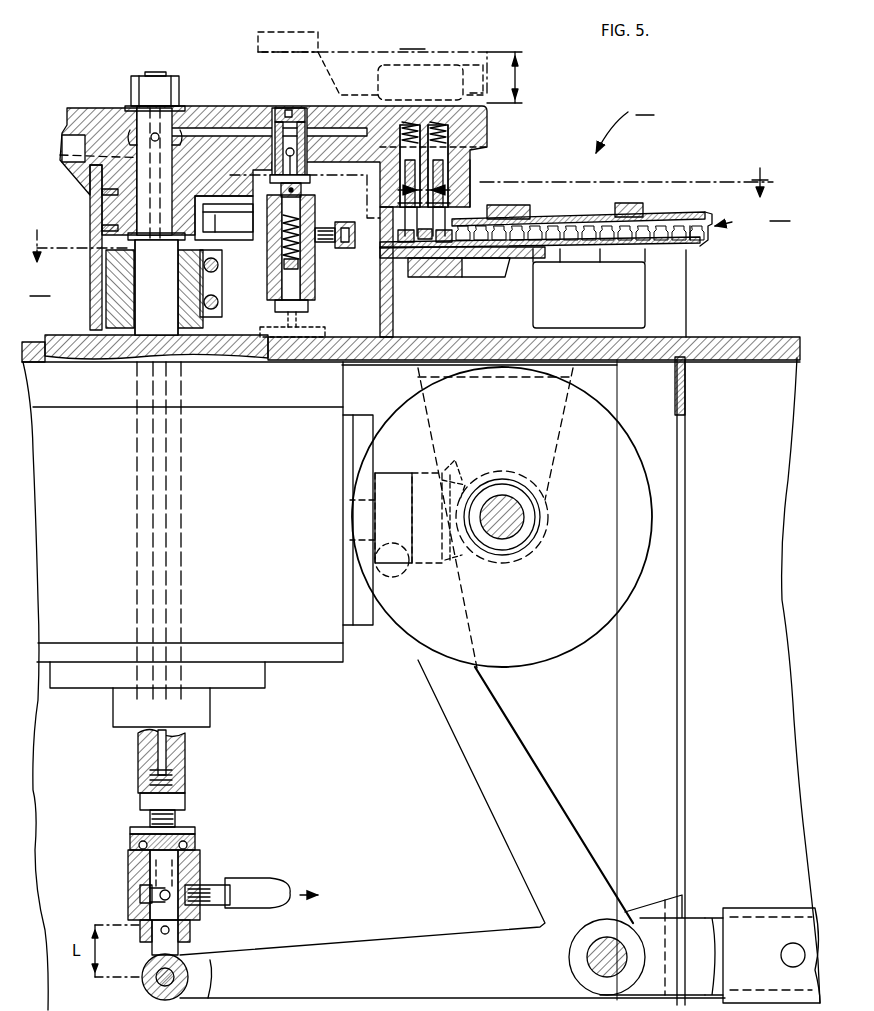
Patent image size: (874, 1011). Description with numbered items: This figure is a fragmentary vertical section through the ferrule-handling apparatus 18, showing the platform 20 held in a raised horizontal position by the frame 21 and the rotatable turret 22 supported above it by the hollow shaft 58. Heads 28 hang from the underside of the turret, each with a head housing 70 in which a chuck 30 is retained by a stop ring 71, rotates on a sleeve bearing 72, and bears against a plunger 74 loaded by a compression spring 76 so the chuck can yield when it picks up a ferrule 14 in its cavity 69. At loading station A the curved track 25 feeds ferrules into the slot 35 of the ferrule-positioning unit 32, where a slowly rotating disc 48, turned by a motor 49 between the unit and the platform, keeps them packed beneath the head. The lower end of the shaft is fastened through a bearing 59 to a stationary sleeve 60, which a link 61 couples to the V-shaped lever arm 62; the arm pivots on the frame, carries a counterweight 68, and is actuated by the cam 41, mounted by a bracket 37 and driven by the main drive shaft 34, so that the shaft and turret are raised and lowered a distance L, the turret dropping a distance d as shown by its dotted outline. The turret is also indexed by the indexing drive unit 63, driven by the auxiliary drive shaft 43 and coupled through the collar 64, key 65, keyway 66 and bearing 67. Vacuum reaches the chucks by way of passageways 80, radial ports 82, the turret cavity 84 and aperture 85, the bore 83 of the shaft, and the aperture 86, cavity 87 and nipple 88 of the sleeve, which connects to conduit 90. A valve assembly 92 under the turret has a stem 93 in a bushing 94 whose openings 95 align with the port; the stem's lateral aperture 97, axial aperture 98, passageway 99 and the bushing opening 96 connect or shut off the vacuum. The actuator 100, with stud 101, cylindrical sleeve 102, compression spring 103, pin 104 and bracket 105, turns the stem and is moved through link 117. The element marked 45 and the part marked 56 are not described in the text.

The ferrules 14 is at (478, 252).
The apparatus 18 is at (635, 162).
The platform 20 is at (760, 335).
The frame 21 is at (685, 706).
The turret 22 is at (258, 58).
The curved track 25 is at (700, 246).
The heads 28 is at (470, 170).
The chucks 30 is at (400, 240).
The ferrule-positioning unit 32 is at (472, 277).
The main drive shaft 34 is at (510, 535).
The slot 35 is at (598, 217).
The bracket 37 is at (617, 370).
The cam 41 is at (640, 507).
The auxiliary drive shaft 43 is at (380, 473).
The pawl 45 is at (465, 462).
The disc 48 is at (602, 252).
The motor 49 is at (645, 306).
The wall 56 is at (380, 250).
The hollow shaft 58 is at (185, 476).
The bearing 59 is at (190, 838).
The stationary sleeve 60 is at (195, 860).
The link 61 is at (178, 945).
The lever arm 62 is at (495, 940).
The indexing drive unit 63 is at (305, 668).
The collar 64 is at (222, 312).
The key 65 is at (90, 212).
The keyway 66 is at (106, 272).
The bearing 67 is at (66, 335).
The counterweight 68 is at (752, 908).
The cavity 69 is at (448, 262).
The head housing 70 is at (487, 118).
The stop ring 71 is at (470, 170).
The sleeve bearing 72 is at (460, 198).
The plunger 74 is at (470, 150).
The compression spring 76 is at (490, 108).
The passageways 80 is at (422, 125).
The port 82 is at (222, 128).
The bore 83 is at (168, 752).
The cavity 84 is at (185, 108).
The aperture 85 is at (150, 134).
The aperture 86 is at (140, 890).
The cavity 87 is at (145, 900).
The nipple 88 is at (218, 885).
The conduit 90 is at (262, 905).
The valve assemblies 92 is at (272, 110).
The valve stem 93 is at (262, 108).
The bushing 94 is at (303, 122).
The openings 95 is at (276, 126).
The opening 96 is at (310, 160).
The laterally extending aperture 97 is at (288, 110).
The axially extending aperture 98 is at (310, 180).
The laterally extending passageway 99 is at (250, 203).
The actuator 100 is at (320, 245).
The stud 101 is at (268, 200).
The cylindrical sleeve 102 is at (282, 222).
The compression spring 103 is at (282, 248).
The pin 104 is at (302, 190).
The bracket 105 is at (267, 283).
The link 117 is at (214, 220).